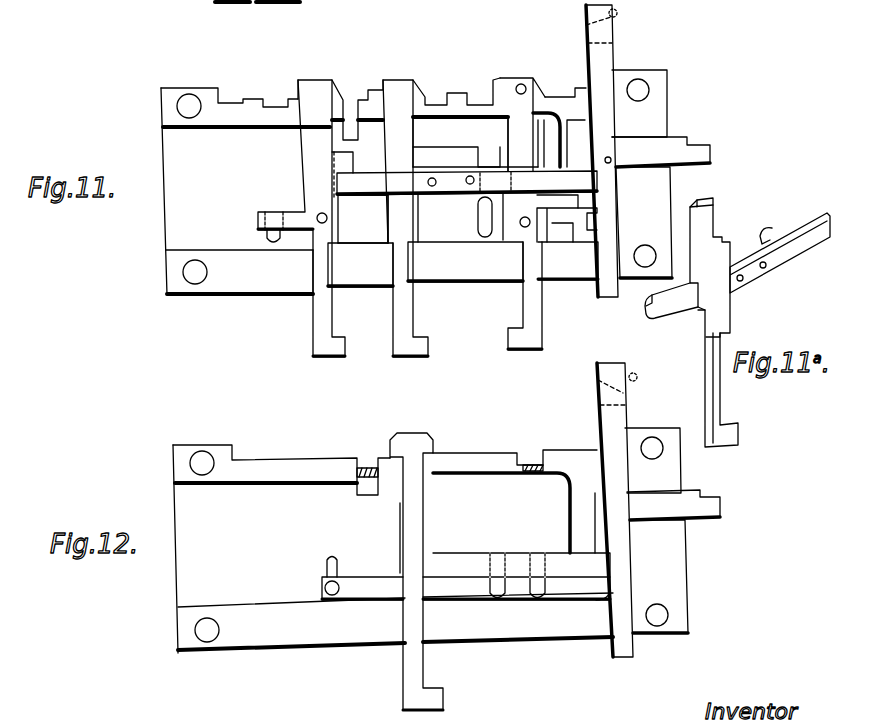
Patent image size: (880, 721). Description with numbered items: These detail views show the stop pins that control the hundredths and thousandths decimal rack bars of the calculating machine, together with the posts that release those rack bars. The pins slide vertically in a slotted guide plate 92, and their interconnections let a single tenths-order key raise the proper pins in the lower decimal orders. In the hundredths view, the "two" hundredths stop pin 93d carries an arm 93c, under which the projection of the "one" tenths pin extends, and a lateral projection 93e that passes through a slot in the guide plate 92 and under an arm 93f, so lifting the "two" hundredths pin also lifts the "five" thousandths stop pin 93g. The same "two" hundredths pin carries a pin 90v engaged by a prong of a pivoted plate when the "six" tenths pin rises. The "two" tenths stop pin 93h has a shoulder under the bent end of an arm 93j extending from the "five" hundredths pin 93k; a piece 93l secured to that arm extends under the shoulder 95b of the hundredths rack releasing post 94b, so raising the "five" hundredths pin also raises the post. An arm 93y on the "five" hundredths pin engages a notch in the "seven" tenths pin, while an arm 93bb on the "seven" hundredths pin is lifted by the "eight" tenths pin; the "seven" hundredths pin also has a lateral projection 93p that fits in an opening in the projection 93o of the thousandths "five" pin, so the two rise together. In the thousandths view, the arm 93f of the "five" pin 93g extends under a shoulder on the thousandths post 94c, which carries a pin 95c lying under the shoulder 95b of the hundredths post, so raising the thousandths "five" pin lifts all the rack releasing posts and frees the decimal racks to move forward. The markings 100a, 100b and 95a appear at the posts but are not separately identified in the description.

In FIG. 11, the guide plate 92 is at (167, 238).
In FIG. 11, the thousandths decimal stop pin 93g is at (305, 150).
In FIG. 11A, the thousandths decimal stop pin 93g is at (648, 313).
In FIG. 12, the thousandths decimal stop pin 93g is at (392, 571).
In FIG. 11, the arm 93bb is at (258, 217).
In FIG. 11, the lateral projection 93p is at (318, 224).
In FIG. 11, the arm 93y is at (370, 190).
In FIG. 11, the "2" stop pin 93h is at (408, 228).
In FIG. 11, the piece 93l is at (452, 185).
In FIG. 11A, the piece 93l is at (800, 258).
In FIG. 11, the "2" hundredths stop pin 93d is at (515, 128).
In FIG. 11, the lateral projection 93e is at (522, 228).
In FIG. 11, the arm 93c is at (570, 218).
In FIG. 11, the pin 90v is at (524, 85).
In FIG. 11, the hundredths rack releasing post 94b is at (615, 55).
In FIG. 11, the pin 100b is at (618, 13).
In FIG. 11, the shoulder 95b is at (588, 167).
In FIG. 11, the ledge 95a is at (612, 160).
In FIG. 11A, the "5" hundredths stop pin 93k is at (708, 222).
In FIG. 11A, the arm 93j is at (763, 236).
In FIG. 12, the lateral projection 93o is at (372, 568).
In FIG. 12, the arm 93f is at (463, 565).
In FIG. 12, the thousandths rack bar post 94c is at (599, 415).
In FIG. 12, the pin 100a is at (650, 380).
In FIG. 12, the pin 95c is at (672, 530).